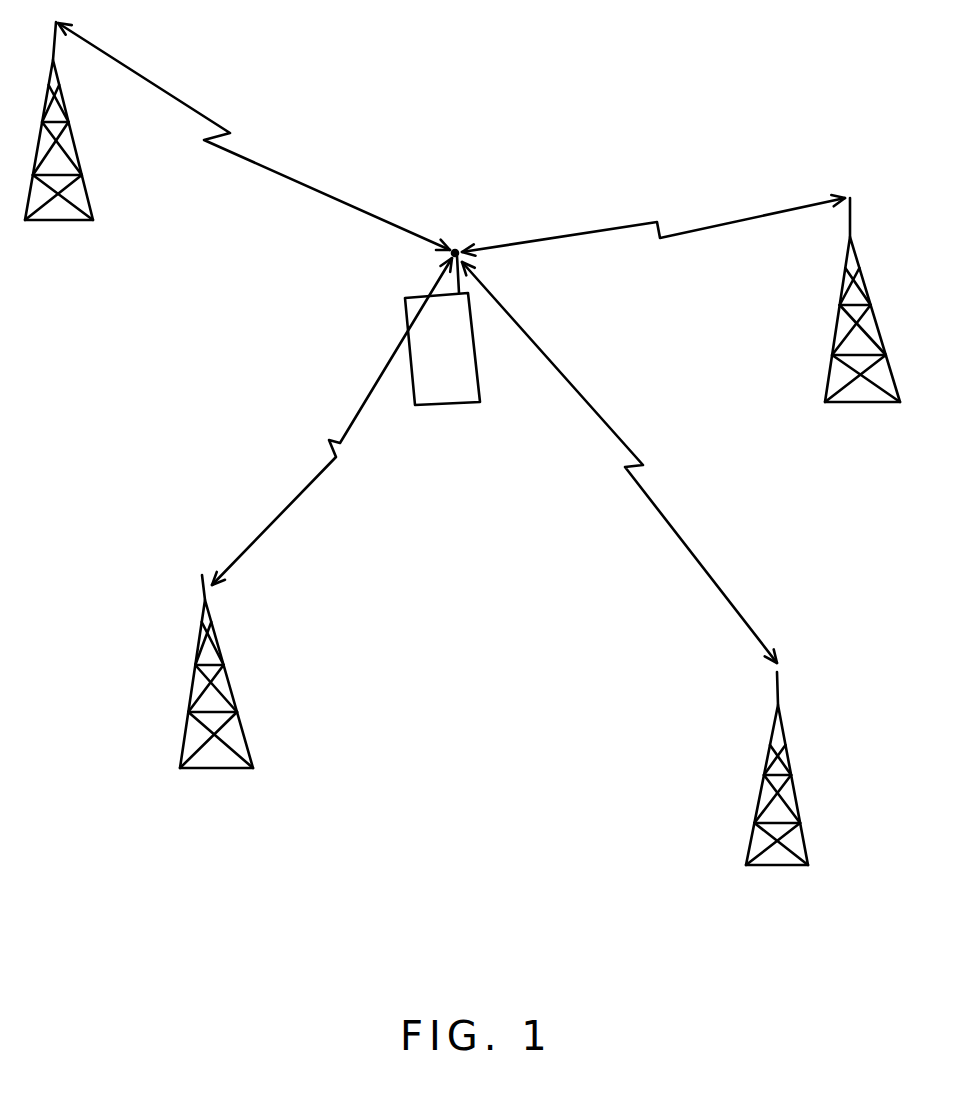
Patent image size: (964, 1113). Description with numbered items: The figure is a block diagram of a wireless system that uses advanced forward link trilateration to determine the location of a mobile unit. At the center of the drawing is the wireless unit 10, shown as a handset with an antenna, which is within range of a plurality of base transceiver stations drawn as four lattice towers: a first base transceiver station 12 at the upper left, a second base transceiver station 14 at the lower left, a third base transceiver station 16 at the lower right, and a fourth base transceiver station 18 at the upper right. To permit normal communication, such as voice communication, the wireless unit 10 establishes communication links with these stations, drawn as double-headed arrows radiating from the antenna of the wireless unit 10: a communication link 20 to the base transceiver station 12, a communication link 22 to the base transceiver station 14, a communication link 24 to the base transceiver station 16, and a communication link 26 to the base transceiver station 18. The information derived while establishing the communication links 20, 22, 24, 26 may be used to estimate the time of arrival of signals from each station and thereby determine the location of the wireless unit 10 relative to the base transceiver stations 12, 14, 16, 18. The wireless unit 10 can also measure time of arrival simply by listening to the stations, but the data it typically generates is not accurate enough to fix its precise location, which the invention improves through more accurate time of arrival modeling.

The wireless unit 10 is at (455, 406).
The base transceiver station 12 is at (60, 222).
The base transceiver station 14 is at (220, 770).
The base transceiver station 16 is at (782, 868).
The base transceiver station 18 is at (860, 405).
The communication link 20 is at (268, 158).
The communication link 22 is at (280, 508).
The communication link 24 is at (690, 540).
The communication link 26 is at (732, 216).